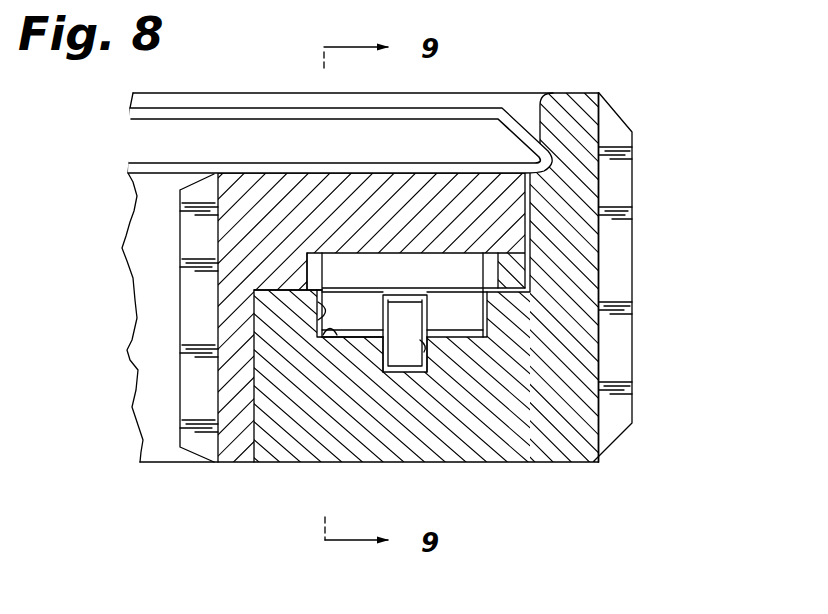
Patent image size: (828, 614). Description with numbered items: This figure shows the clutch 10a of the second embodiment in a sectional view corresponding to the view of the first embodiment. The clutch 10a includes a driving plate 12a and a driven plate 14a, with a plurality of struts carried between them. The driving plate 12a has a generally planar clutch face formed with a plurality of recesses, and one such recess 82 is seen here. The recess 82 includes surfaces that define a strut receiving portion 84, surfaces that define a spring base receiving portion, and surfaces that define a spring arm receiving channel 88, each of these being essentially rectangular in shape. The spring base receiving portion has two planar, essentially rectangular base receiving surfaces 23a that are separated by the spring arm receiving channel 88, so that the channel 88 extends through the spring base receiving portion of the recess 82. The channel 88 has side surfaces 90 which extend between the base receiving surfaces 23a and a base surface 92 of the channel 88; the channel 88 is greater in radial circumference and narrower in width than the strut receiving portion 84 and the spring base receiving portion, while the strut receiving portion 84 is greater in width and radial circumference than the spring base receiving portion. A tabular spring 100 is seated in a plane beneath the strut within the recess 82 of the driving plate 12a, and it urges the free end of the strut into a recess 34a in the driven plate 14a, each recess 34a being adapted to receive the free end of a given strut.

The clutch 10a is at (670, 147).
The driving plate 12a is at (644, 278).
The driven plate 14a is at (534, 217).
The recess 34a is at (492, 275).
The base receiving surface 23a is at (452, 327).
The recess 82 is at (487, 332).
The strut receiving portion 84 is at (318, 293).
The spring arm receiving channel 88 is at (380, 375).
The side surfaces 90 is at (425, 355).
The base surface 92 is at (420, 348).
The tabular spring 100 is at (353, 330).